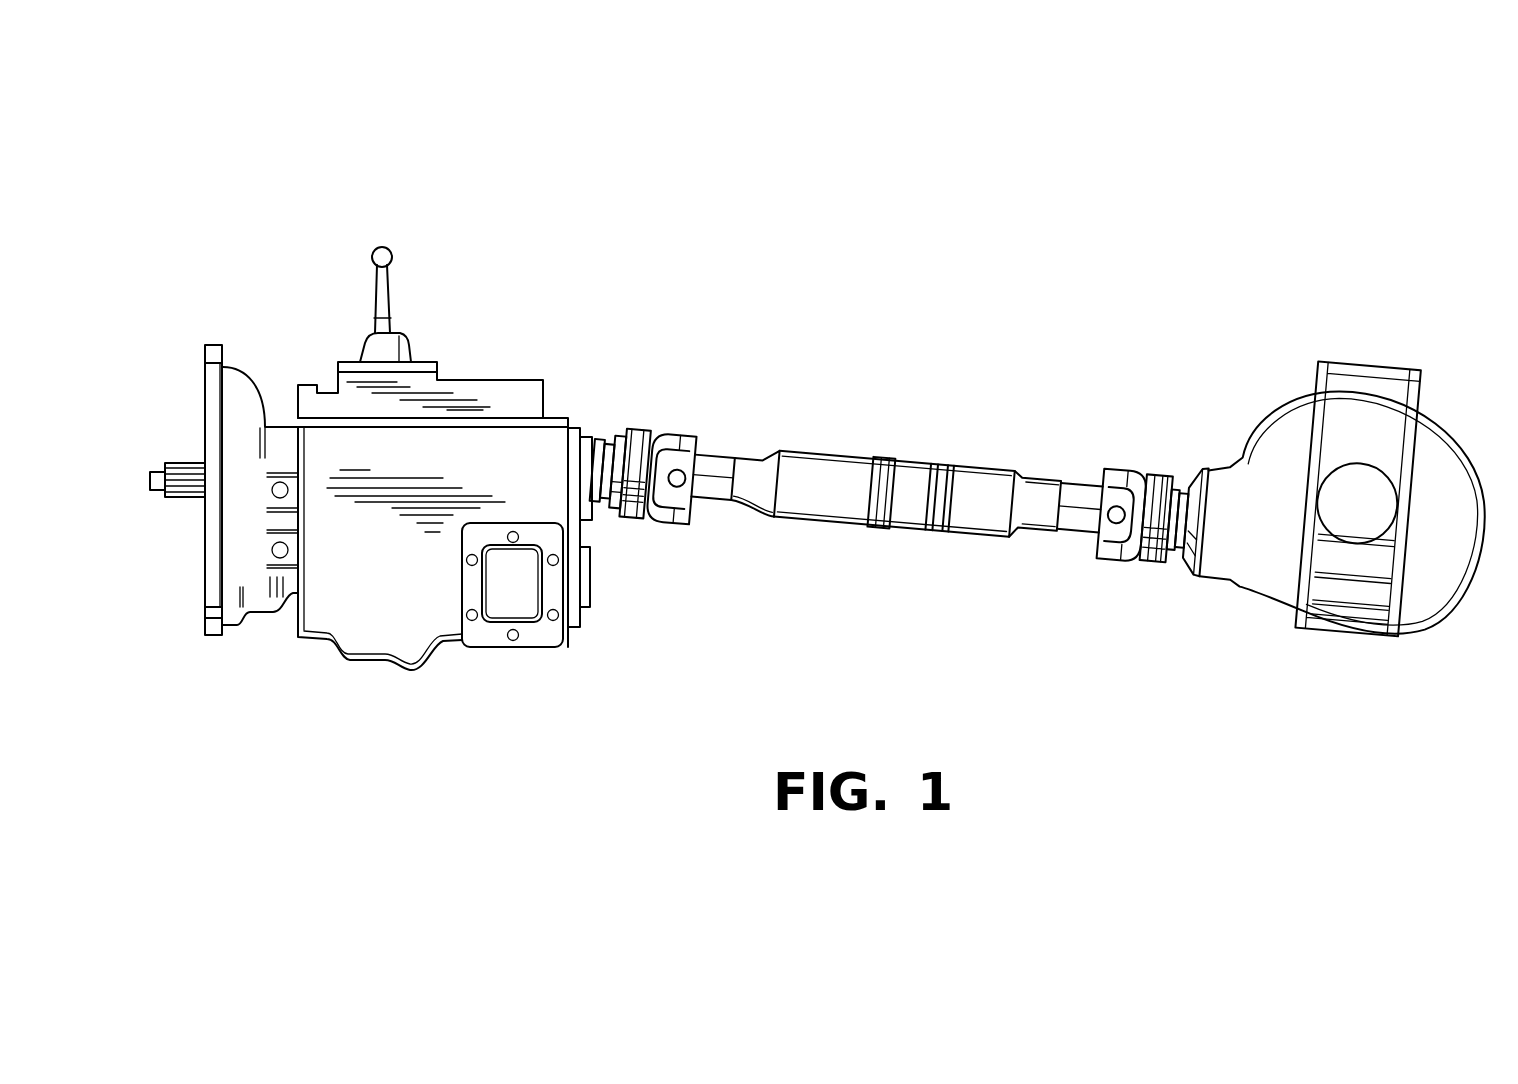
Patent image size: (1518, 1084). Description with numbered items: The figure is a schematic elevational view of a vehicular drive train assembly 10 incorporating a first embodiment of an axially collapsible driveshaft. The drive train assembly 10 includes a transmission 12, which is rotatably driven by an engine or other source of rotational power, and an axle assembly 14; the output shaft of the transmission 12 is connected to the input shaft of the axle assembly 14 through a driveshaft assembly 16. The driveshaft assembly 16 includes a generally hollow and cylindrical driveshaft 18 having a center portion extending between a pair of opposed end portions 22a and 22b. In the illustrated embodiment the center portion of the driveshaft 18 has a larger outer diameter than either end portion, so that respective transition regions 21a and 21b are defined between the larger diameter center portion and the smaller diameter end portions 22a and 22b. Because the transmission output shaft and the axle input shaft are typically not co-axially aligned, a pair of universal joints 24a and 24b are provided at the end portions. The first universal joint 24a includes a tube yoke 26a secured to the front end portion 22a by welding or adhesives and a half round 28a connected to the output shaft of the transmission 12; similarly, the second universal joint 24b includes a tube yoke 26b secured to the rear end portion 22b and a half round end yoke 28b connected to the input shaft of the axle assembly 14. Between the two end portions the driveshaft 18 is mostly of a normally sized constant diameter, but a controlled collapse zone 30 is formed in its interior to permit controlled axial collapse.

The vehicular drive train assembly 10 is at (428, 170).
The transmission 12 is at (380, 647).
The axle assembly 14 is at (1338, 625).
The driveshaft assembly 16 is at (1175, 347).
The driveshaft 18 is at (838, 424).
The transition region 21a is at (765, 523).
The transition region 21b is at (1022, 478).
The front end portion 22a is at (748, 453).
The rear end portion 22b is at (1046, 480).
The first universal joint 24a is at (665, 418).
The second universal joint 24b is at (1124, 578).
The tube yoke 26a is at (722, 460).
The tube yoke 26b is at (1070, 538).
The half round 28a is at (663, 530).
The half round end yoke 28b is at (1121, 474).
The controlled collapse zone 30 is at (962, 548).